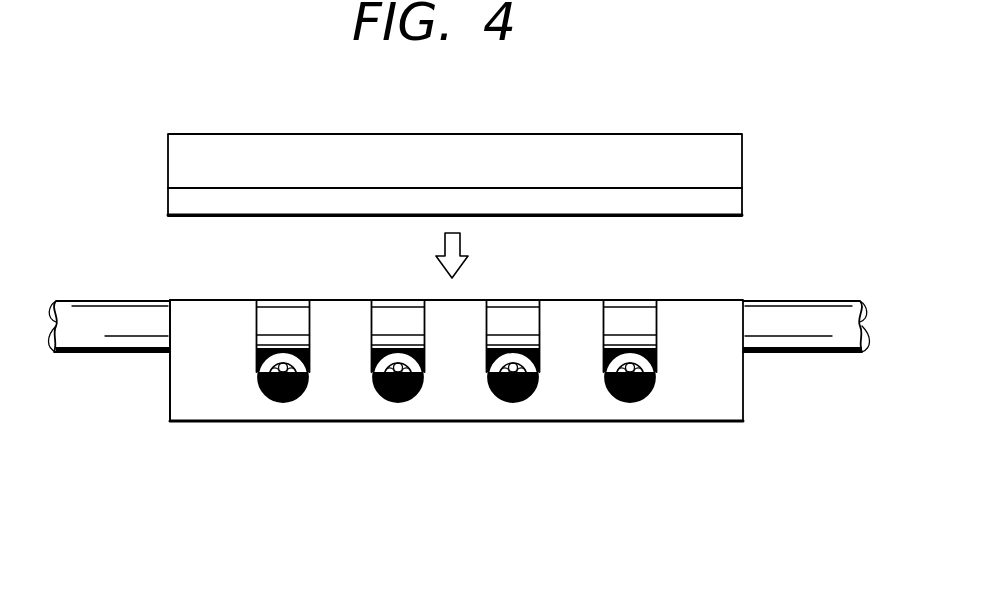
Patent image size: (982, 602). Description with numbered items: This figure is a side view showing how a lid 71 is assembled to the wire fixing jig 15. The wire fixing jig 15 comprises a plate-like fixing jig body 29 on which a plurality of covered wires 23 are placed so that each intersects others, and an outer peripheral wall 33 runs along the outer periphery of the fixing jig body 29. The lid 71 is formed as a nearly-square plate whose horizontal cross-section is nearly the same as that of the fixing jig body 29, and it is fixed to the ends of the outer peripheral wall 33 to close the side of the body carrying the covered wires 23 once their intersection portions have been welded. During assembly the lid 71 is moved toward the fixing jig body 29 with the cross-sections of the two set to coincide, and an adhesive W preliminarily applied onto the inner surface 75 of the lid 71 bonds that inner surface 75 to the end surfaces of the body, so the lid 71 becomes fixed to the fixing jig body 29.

The wire fixing jig 15 is at (459, 387).
The covered wire 23 is at (93, 317).
The fixing jig body 29 is at (197, 423).
The outer peripheral wall 33 is at (152, 366).
The lid 71 is at (426, 139).
The inner surface 75 is at (263, 194).
The adhesive W is at (180, 202).